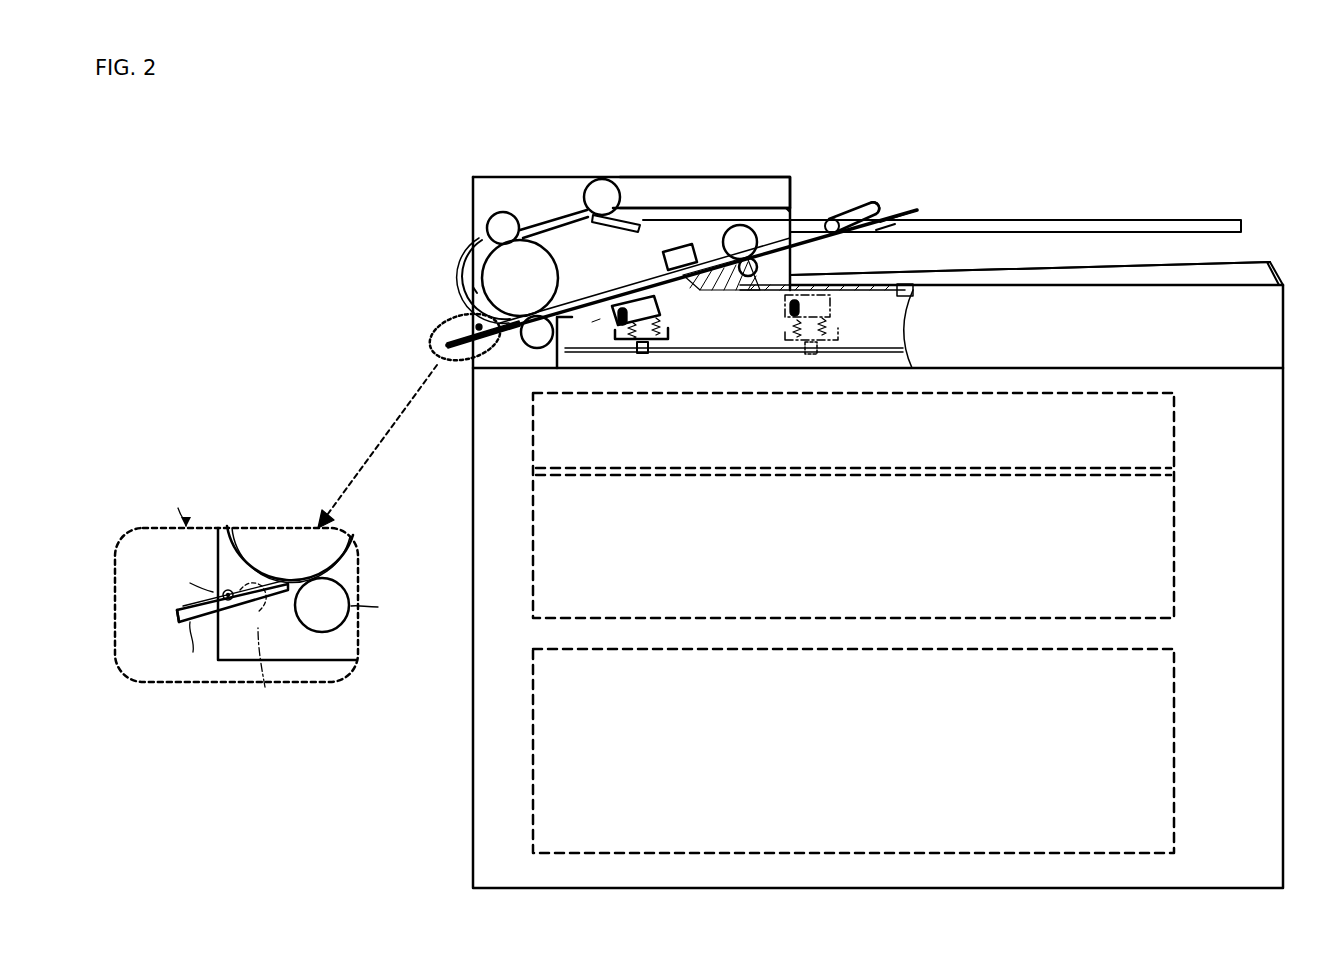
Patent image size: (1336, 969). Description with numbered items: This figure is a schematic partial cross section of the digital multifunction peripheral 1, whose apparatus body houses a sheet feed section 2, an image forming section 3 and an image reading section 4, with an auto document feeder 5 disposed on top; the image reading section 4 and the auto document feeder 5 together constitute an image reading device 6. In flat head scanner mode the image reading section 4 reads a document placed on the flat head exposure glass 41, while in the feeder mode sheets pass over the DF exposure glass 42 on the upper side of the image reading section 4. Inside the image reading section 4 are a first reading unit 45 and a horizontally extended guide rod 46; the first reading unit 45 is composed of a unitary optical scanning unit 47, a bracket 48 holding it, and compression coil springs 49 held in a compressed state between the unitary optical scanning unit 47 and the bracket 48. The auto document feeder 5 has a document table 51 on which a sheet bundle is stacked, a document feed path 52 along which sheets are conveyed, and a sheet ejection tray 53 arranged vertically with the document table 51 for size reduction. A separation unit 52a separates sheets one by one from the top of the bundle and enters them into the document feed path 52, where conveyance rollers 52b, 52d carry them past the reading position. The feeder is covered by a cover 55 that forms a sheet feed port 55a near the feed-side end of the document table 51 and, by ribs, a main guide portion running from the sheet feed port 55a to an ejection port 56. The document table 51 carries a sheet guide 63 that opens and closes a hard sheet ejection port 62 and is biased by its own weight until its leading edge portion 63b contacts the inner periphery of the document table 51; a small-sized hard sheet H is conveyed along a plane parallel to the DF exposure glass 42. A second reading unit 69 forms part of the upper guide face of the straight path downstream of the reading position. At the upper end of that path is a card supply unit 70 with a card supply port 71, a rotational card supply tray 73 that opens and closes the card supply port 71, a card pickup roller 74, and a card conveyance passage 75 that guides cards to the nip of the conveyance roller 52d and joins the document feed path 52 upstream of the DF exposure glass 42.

The digital multifunction peripheral 1 is at (1012, 118).
The sheet feed section 2 is at (528, 732).
The image forming section 3 is at (530, 537).
The image reading section 4 is at (1283, 326).
The auto document feeder 5 is at (538, 186).
The image reading device 6 is at (426, 305).
The flat head exposure glass 41 is at (906, 290).
The DF exposure glass 42 is at (626, 293).
The first reading unit 45 is at (598, 321).
The guide rod 46 is at (905, 341).
The unitary optical scanning unit 47 is at (662, 305).
The bracket 48 is at (650, 354).
The compression coil springs 49 is at (667, 329).
The document table 51 is at (1107, 220).
The document feed path 52 is at (640, 213).
The separation unit 52a is at (597, 180).
The conveyance roller 52b is at (487, 228).
The conveyance roller 52d is at (532, 348).
The sheet ejection tray 53 is at (1247, 264).
The cover 55 is at (730, 177).
The sheet feed port 55a is at (794, 218).
The ejection port 56 is at (795, 249).
The hard sheet ejection port 62 is at (880, 231).
The sheet guide 63 is at (849, 214).
The leading edge portion 63b is at (877, 208).
The second reading unit 69 is at (690, 243).
The card supply unit 70 is at (420, 360).
The card supply port 71 is at (450, 342).
The card supply tray 73 is at (466, 358).
The card pickup roller 74 is at (265, 688).
The card conveyance passage 75 is at (275, 603).
The hard sheet H is at (908, 215).